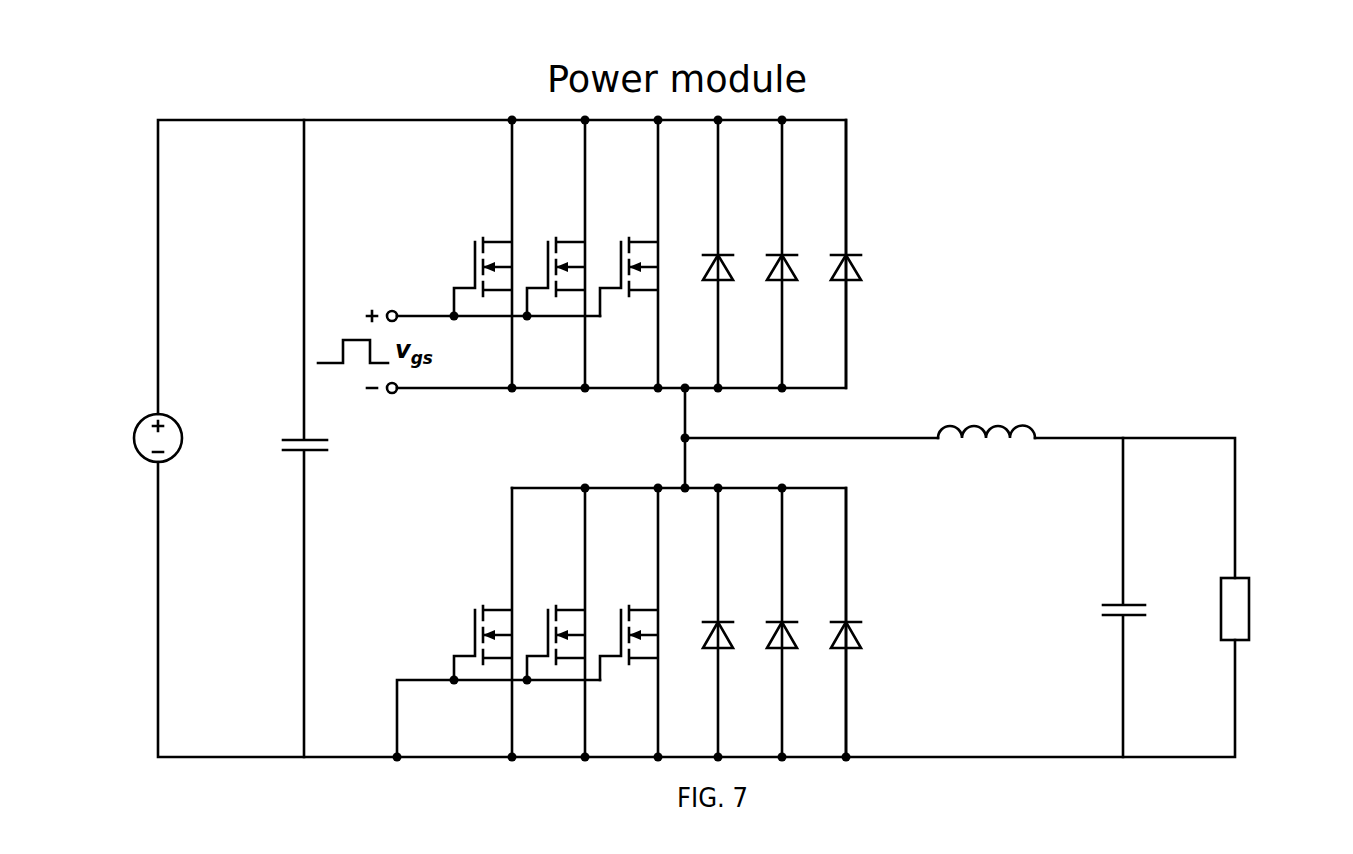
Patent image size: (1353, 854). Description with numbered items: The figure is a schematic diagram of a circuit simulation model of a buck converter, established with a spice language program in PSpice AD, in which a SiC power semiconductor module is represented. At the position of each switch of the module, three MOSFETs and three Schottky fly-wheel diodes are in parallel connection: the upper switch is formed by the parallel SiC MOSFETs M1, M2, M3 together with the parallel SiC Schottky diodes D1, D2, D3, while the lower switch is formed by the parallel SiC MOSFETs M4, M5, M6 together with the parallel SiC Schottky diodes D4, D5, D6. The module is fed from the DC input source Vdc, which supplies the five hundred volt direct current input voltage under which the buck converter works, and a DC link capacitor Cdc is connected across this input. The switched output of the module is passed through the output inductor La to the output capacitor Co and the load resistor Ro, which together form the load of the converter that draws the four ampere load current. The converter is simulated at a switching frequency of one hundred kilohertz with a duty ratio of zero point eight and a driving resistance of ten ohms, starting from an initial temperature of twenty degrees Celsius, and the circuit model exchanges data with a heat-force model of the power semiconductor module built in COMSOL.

The MOSFET switch M1 is at (506, 254).
The MOSFET switch M2 is at (579, 254).
The MOSFET switch M3 is at (652, 254).
The MOSFET switch M4 is at (506, 622).
The MOSFET switch M5 is at (579, 622).
The MOSFET switch M6 is at (652, 622).
The diode D1 is at (732, 254).
The diode D2 is at (796, 254).
The diode D3 is at (860, 254).
The diode D4 is at (731, 622).
The diode D5 is at (795, 622).
The diode D6 is at (859, 622).
The DC voltage source 500V Vdc is at (127, 436).
The DC link capacitor 940uF Cdc is at (342, 438).
The output inductor 0.8mH La is at (986, 430).
The output capacitor 940uF Co is at (1158, 597).
The load resistor 100 ohm Ro is at (1275, 615).